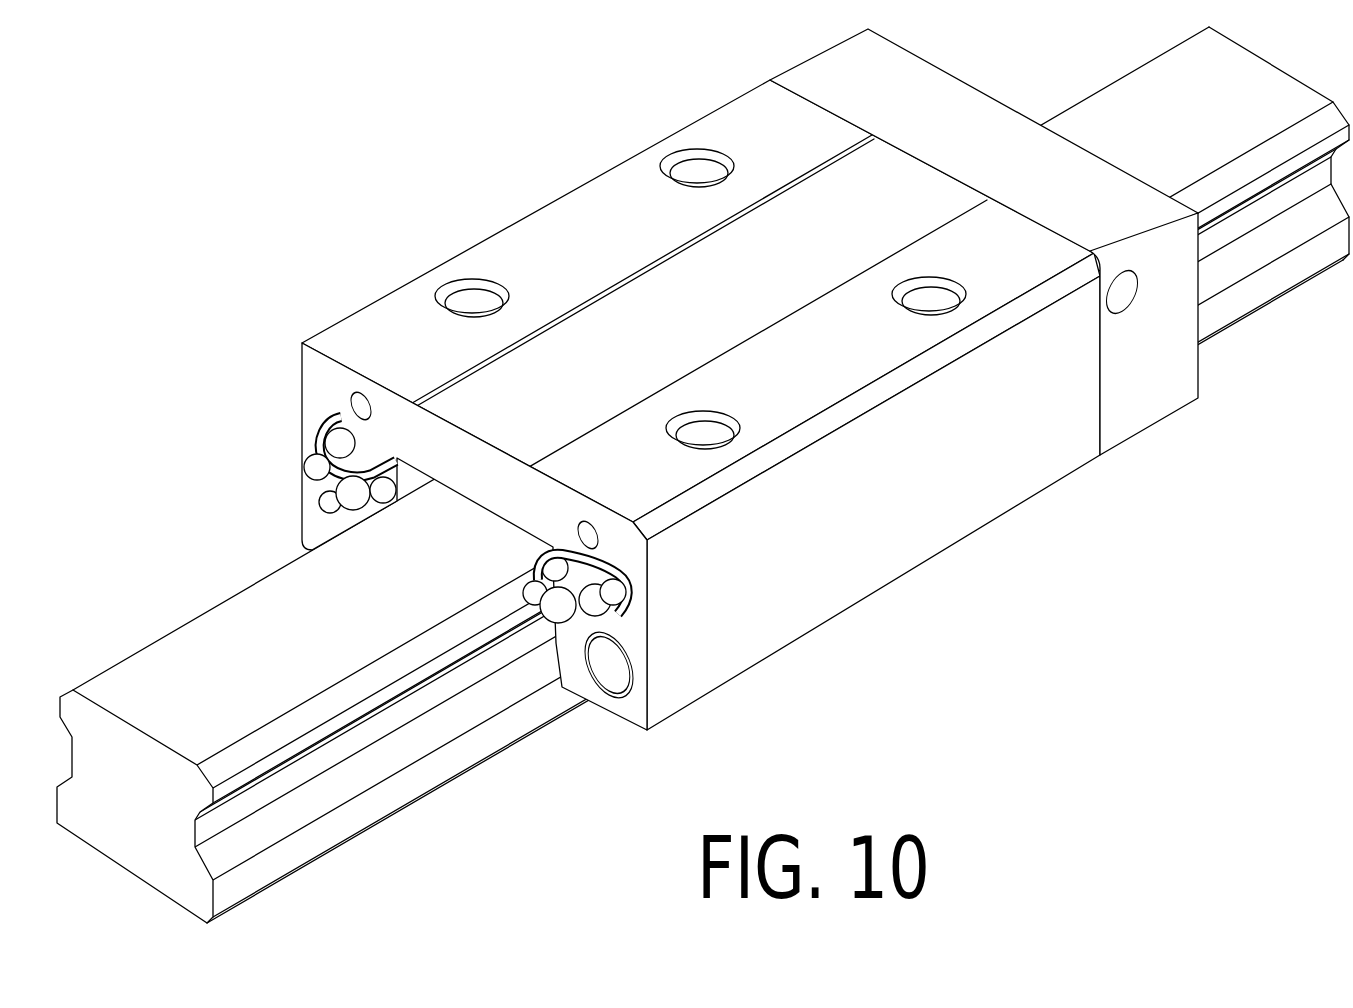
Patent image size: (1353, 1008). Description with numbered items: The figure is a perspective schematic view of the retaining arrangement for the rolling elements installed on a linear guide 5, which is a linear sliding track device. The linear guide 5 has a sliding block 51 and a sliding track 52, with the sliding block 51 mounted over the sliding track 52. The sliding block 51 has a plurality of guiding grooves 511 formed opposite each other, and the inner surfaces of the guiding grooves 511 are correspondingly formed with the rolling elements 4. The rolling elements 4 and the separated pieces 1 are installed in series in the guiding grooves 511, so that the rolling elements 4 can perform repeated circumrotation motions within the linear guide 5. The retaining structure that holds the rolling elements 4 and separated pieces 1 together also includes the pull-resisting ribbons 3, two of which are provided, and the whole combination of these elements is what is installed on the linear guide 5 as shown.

The separated pieces 1 is at (400, 468).
The pull-resisting ribbons 3 is at (313, 402).
The rolling elements 4 is at (317, 467).
The linear guide 5 is at (750, 379).
The sliding block 51 is at (980, 487).
The guiding grooves 511 is at (647, 617).
The sliding track 52 is at (142, 677).